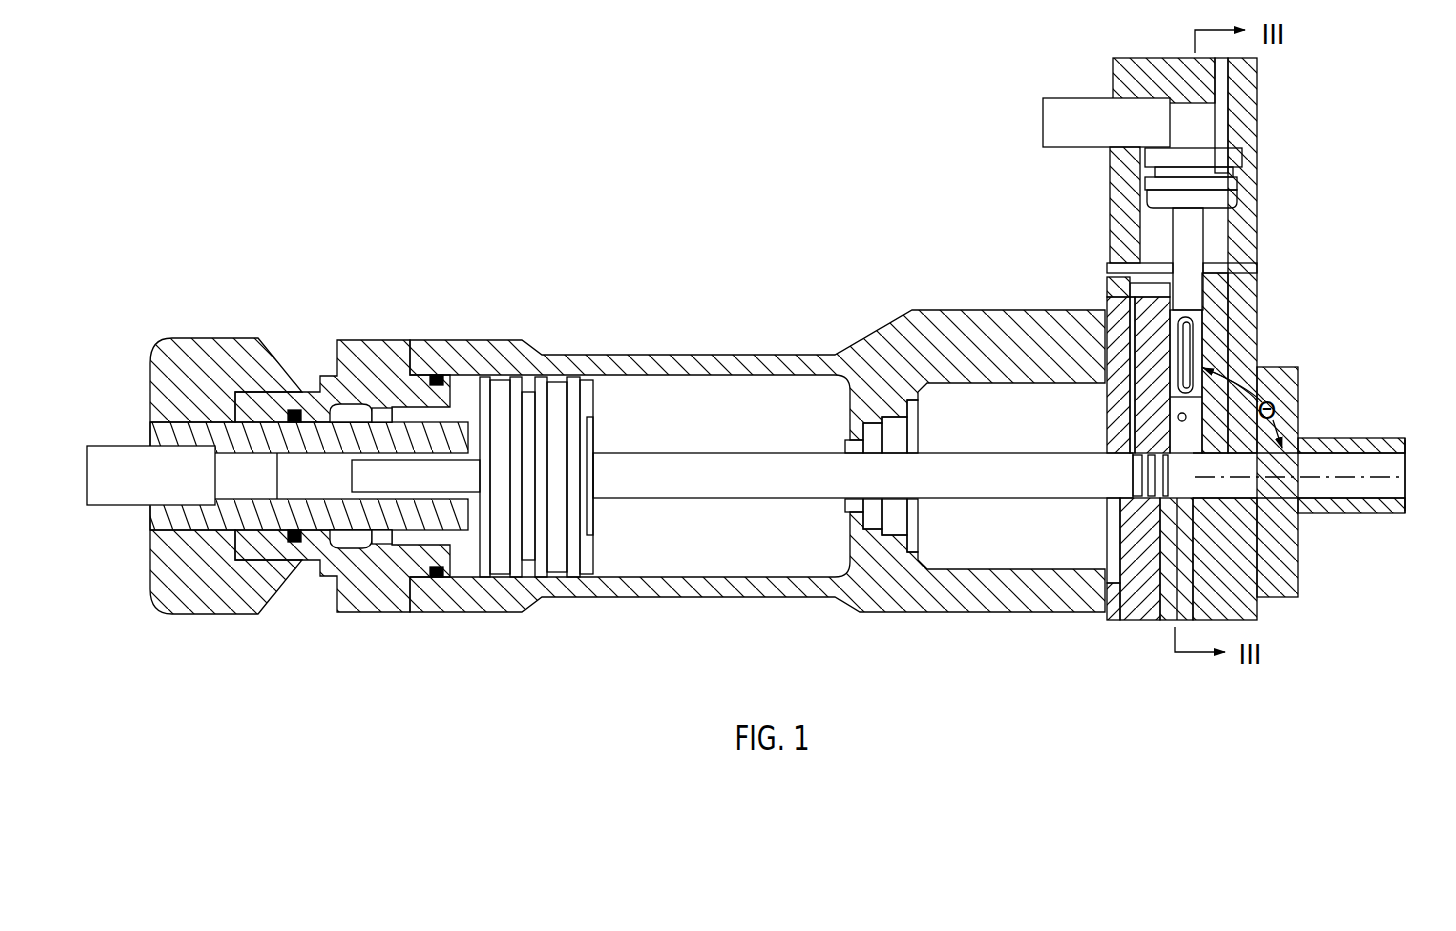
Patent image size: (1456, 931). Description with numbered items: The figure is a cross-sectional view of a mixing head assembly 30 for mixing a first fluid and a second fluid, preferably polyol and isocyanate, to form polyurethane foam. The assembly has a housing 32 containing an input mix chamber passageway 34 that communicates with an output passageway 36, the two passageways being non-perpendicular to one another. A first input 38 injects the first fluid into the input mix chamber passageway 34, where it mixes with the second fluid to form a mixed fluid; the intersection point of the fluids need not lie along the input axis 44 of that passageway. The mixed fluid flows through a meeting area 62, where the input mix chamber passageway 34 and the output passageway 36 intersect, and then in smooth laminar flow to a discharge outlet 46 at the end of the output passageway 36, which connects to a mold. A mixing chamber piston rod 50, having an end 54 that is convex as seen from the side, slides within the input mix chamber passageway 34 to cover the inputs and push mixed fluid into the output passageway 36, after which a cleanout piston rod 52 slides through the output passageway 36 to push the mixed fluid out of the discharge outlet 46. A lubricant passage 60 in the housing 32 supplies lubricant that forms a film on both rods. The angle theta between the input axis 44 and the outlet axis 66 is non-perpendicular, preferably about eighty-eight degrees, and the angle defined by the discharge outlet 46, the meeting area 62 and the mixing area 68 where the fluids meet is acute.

The mixing head assembly 30 is at (672, 190).
The housing 32 is at (610, 353).
The input mix chamber passageway 34 is at (1210, 453).
The output passageway 36 is at (1368, 458).
The first input 38 is at (1178, 423).
The input axis 44 is at (1137, 458).
The discharge outlet 46 is at (1405, 472).
The mixing chamber piston rod 50 is at (1198, 236).
The cleanout piston rod 52 is at (677, 482).
The end 54 is at (1185, 408).
The lubricant passage 60 is at (1140, 297).
The meeting area 62 is at (1197, 470).
The outlet axis 66 is at (1348, 477).
The mixing area 68 is at (1200, 423).